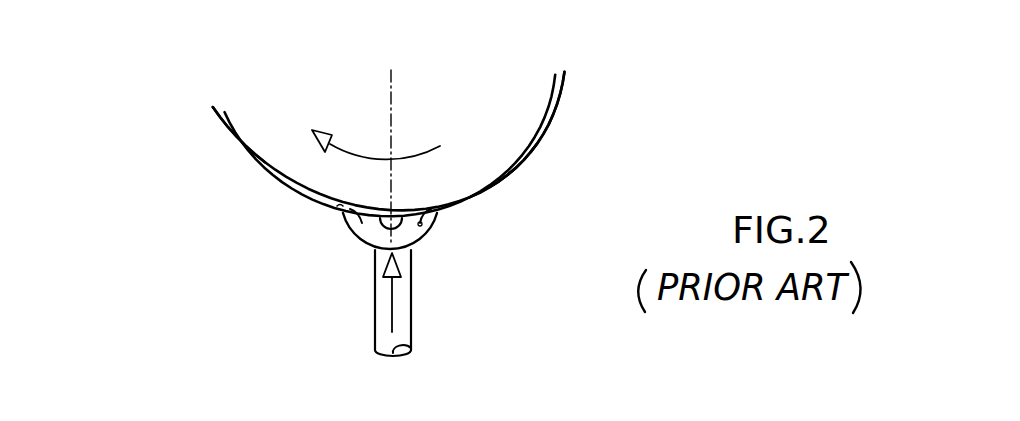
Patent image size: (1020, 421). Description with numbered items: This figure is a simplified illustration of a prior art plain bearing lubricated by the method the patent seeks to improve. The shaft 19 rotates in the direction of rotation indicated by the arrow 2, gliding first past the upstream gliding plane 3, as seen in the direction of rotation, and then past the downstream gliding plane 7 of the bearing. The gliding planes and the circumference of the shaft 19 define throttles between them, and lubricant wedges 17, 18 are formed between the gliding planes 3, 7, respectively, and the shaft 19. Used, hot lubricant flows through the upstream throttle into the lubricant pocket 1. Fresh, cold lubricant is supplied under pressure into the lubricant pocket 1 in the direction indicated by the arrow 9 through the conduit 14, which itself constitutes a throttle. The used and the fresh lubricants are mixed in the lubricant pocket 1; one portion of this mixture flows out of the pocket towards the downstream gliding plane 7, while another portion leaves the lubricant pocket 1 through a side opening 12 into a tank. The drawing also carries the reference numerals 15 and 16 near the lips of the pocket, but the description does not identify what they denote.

The lubricant pocket 1 is at (343, 223).
The arrow 2 is at (421, 149).
The upstream gliding plane 3 is at (503, 184).
The downstream gliding plane 7 is at (247, 160).
The arrow 9 is at (395, 317).
The side opening 12 is at (387, 229).
The conduit 14 is at (375, 328).
The right lip 15 is at (433, 210).
The left lip 16 is at (351, 208).
The lubricant wedge 17 is at (528, 156).
The lubricant wedge 18 is at (241, 138).
The shaft 19 is at (548, 112).